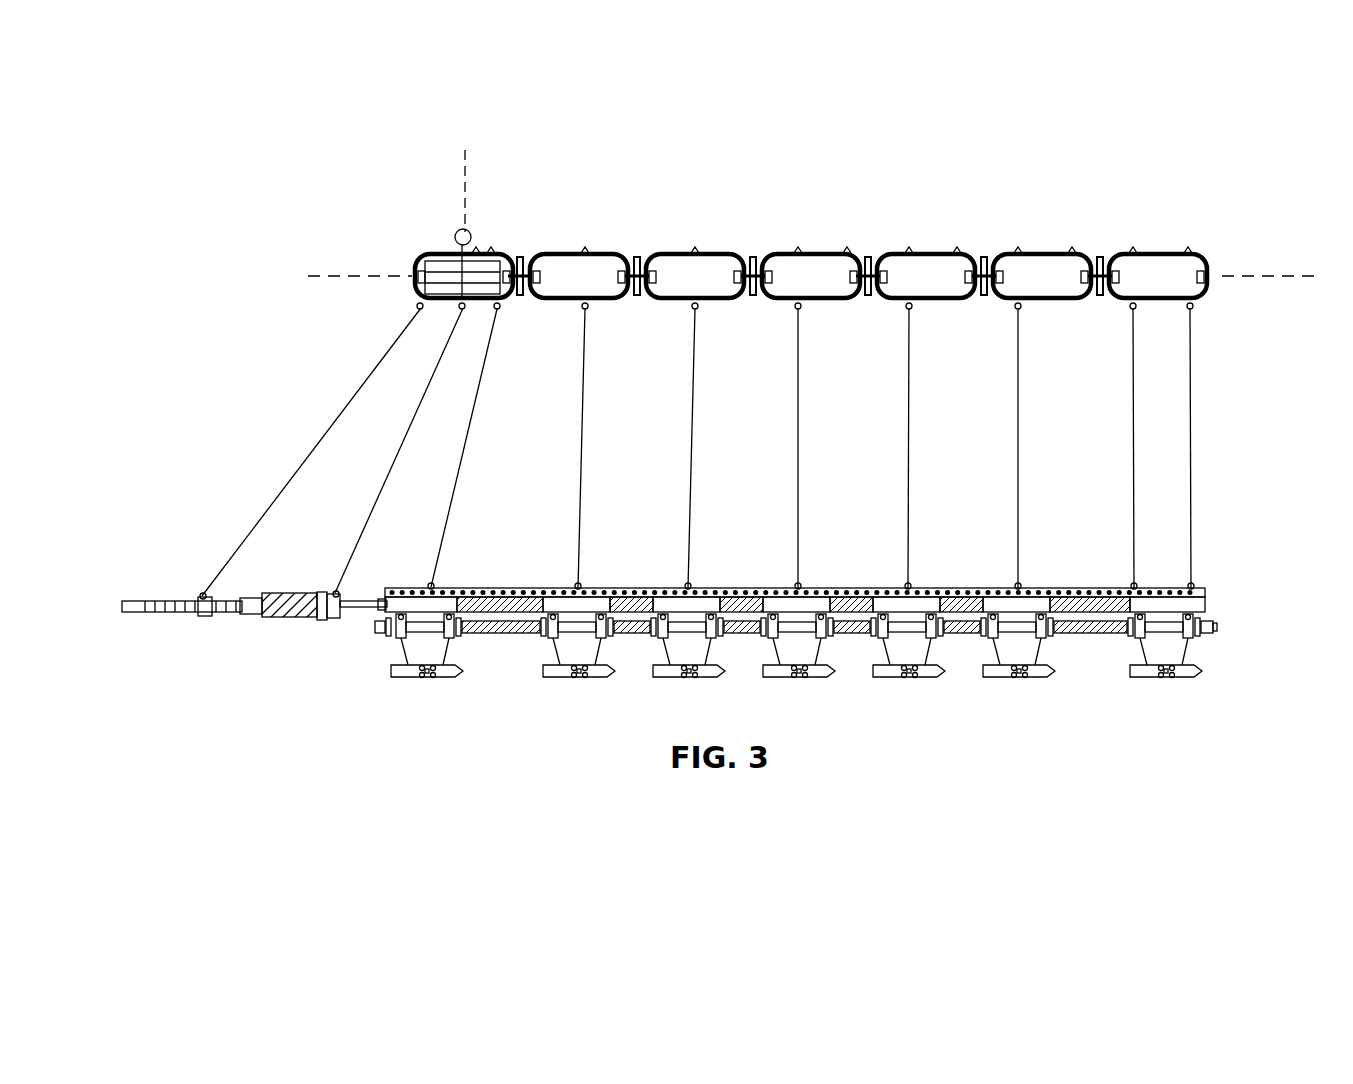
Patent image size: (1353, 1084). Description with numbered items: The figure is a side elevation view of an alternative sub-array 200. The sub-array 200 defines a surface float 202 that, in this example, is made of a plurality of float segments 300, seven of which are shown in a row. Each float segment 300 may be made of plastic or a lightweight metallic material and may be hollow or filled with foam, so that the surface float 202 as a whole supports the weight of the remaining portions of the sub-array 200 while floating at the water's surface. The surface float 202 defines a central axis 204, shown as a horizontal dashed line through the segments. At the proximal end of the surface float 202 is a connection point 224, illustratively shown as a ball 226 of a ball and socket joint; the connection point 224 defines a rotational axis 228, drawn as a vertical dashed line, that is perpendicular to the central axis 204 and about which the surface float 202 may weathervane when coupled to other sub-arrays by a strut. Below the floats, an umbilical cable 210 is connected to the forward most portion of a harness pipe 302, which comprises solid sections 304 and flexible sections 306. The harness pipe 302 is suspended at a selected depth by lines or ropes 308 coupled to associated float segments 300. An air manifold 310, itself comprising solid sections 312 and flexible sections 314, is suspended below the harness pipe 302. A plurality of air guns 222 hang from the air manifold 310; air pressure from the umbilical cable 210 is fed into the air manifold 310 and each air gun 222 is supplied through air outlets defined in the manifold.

The sub-array 200 is at (327, 150).
The surface float 202 is at (556, 192).
The central axis 204 is at (1245, 272).
The umbilical cable 210 is at (138, 600).
The air gun 222 is at (405, 678).
The connection point 224 is at (432, 237).
The ball 226 is at (456, 232).
The rotational axis 228 is at (463, 178).
The float segment 300 is at (480, 252).
The harness pipe 302 is at (415, 584).
The solid section 304 is at (448, 592).
The flexible section 306 is at (512, 597).
The line or rope 308 is at (462, 455).
The air manifold 310 is at (377, 625).
The solid section 312 is at (418, 630).
The flexible section 314 is at (492, 640).